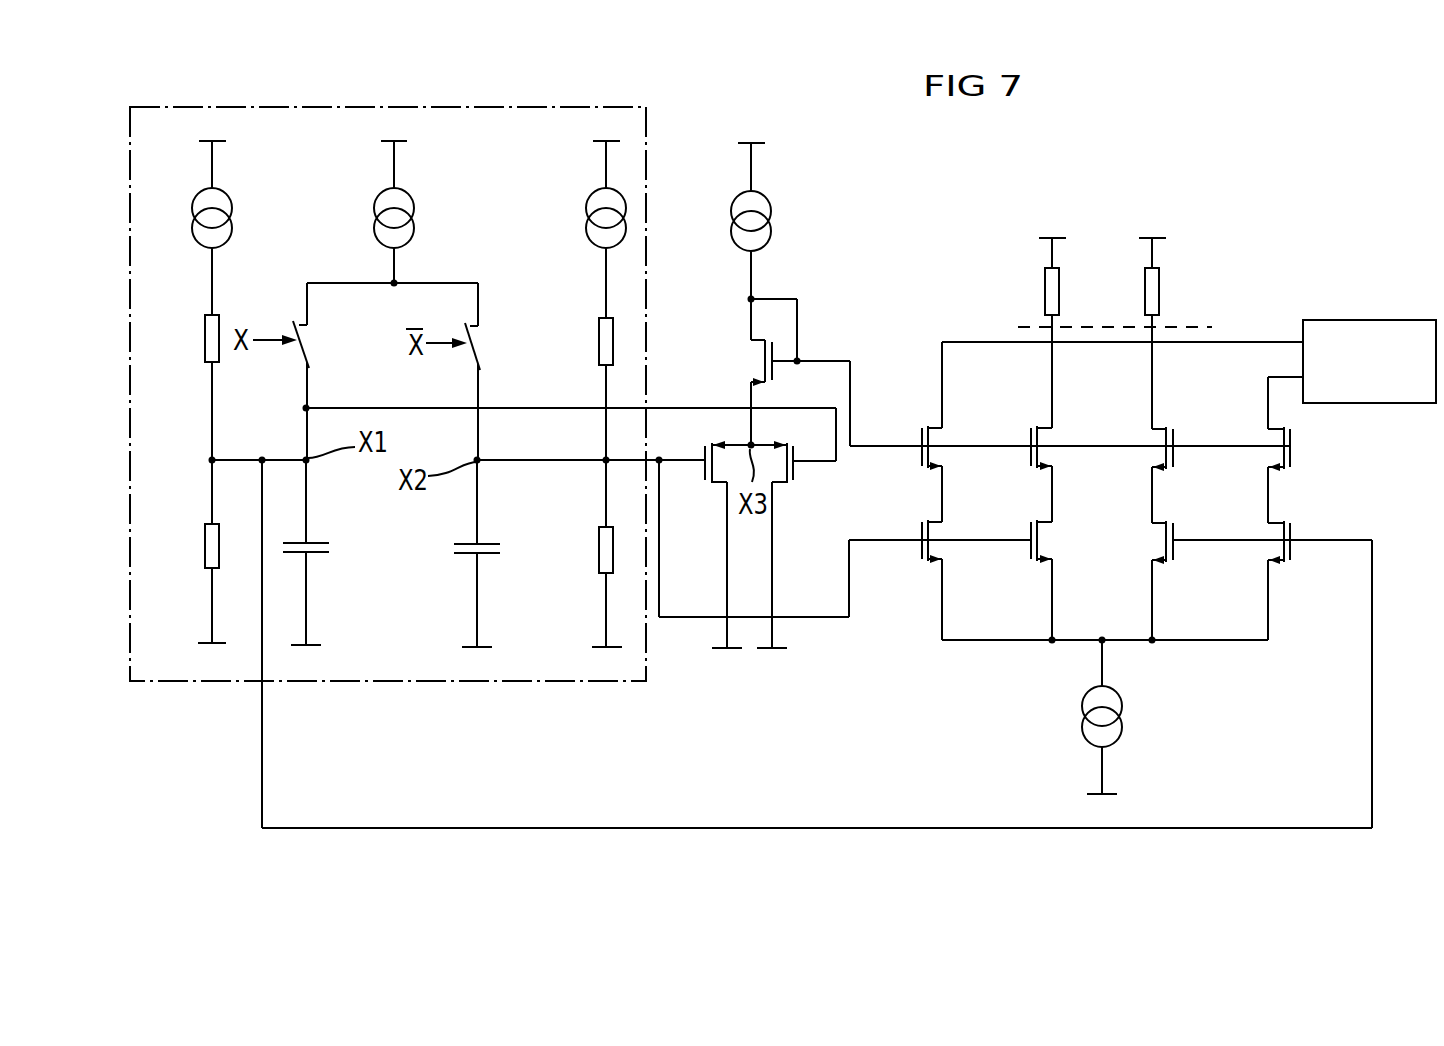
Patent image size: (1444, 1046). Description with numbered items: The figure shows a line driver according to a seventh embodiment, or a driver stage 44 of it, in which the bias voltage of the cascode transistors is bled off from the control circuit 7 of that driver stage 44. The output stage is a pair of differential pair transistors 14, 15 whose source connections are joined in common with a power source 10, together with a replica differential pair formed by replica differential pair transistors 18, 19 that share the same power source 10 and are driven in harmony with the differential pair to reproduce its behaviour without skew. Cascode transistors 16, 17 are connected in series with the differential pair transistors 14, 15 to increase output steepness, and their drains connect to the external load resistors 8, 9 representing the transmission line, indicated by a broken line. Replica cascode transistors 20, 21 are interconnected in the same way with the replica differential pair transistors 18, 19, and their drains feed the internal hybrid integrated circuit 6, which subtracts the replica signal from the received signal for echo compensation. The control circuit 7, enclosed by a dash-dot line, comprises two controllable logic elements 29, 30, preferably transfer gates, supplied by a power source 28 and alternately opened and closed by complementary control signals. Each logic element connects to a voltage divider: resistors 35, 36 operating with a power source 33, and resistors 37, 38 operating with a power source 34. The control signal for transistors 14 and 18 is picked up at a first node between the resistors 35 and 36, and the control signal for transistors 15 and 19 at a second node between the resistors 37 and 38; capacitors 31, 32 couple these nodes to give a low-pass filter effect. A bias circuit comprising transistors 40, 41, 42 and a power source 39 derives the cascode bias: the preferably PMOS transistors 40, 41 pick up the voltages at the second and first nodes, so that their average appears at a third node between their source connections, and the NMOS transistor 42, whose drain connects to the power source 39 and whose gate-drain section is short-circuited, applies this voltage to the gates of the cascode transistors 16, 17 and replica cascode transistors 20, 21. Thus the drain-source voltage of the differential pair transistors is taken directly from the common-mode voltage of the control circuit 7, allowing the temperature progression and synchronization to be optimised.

The hybrid integrated circuit 6 is at (1371, 320).
The control circuit 7 is at (432, 107).
The load resistor 8 is at (1161, 291).
The load resistor 9 is at (1061, 291).
The power source 10 is at (1082, 706).
The differential pair transistor 14 is at (1175, 561).
The differential pair transistor 15 is at (1027, 553).
The cascode transistor 16 is at (1175, 433).
The cascode transistor 17 is at (1030, 429).
The replica differential pair transistor 18 is at (1292, 561).
The replica differential pair transistor 19 is at (921, 526).
The replica cascode transistor 20 is at (1292, 468).
The replica cascode transistor 21 is at (921, 433).
The power source 28 is at (414, 207).
The controllable logic element 29 is at (312, 352).
The controllable logic element 30 is at (485, 340).
The capacitor 31 is at (318, 556).
The capacitor 32 is at (461, 556).
The power source 33 is at (230, 206).
The power source 34 is at (588, 207).
The resistor 35 is at (204, 338).
The resistor 36 is at (203, 545).
The resistor 37 is at (599, 342).
The resistor 38 is at (597, 550).
The power source 39 is at (772, 210).
The transistor 40 is at (703, 478).
The transistor 41 is at (796, 478).
The transistor 42 is at (766, 361).
The driver stage 44 is at (1212, 855).